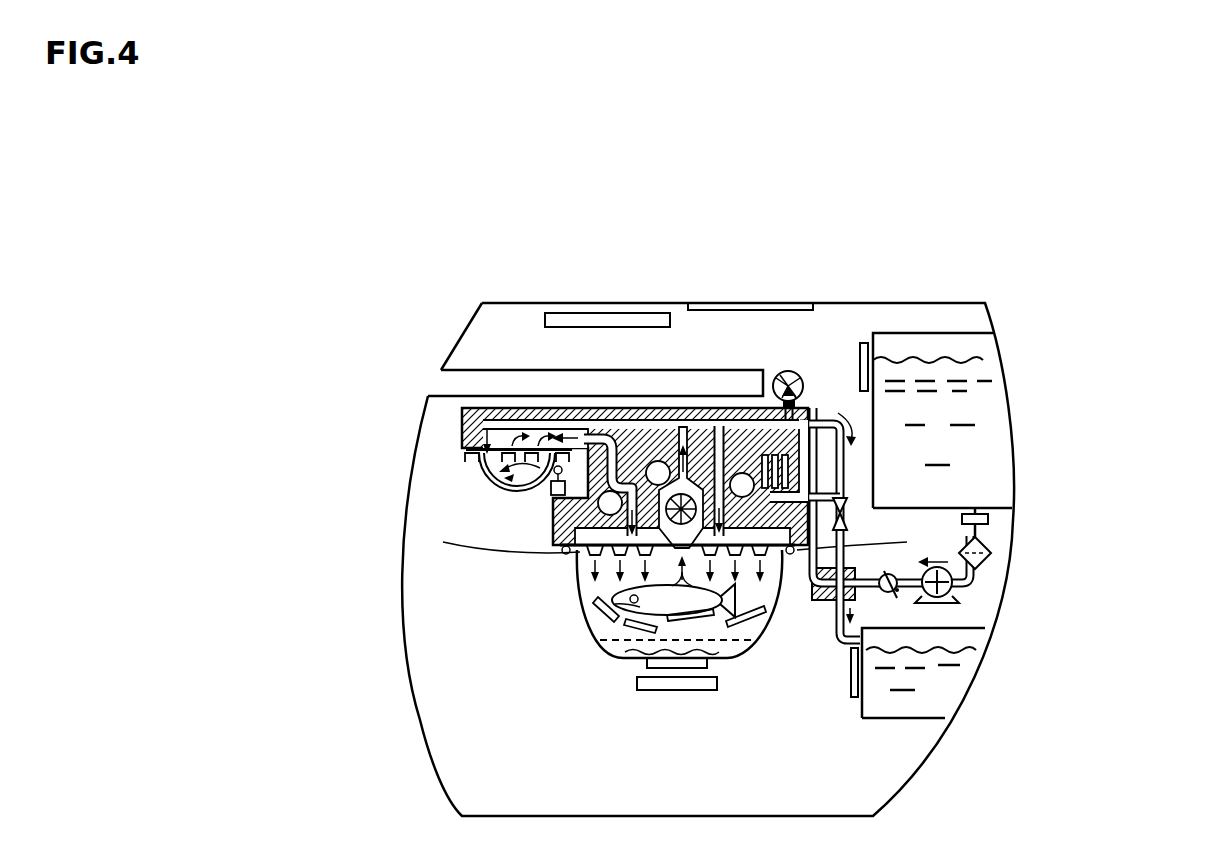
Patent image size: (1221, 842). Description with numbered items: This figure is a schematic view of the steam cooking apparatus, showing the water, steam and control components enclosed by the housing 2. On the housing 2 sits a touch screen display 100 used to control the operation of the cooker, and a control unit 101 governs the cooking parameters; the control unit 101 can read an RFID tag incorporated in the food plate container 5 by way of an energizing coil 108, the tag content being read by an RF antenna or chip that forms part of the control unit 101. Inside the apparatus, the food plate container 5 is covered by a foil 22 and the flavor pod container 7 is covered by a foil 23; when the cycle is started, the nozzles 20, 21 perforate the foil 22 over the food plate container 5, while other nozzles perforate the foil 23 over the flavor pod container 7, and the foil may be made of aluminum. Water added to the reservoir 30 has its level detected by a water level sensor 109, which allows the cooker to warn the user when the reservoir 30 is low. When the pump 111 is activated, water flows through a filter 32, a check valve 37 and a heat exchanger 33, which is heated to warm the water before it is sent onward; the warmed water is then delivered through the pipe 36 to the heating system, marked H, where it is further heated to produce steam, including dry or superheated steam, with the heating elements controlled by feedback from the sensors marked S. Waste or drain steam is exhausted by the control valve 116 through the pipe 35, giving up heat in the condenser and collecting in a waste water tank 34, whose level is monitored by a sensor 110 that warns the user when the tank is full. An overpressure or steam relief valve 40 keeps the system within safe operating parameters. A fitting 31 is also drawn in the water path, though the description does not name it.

The housing 2 is at (477, 302).
The control unit 101 is at (613, 318).
The touch screen display 100 is at (763, 303).
The water level sensor 109 is at (863, 343).
The overpressure or steam relief valve 40 is at (789, 372).
The pipe 35 is at (818, 420).
The reservoir 30 is at (1000, 408).
The control valve 116 is at (848, 503).
The connector 31 is at (990, 519).
The filter 32 is at (990, 553).
The pump 111 is at (955, 592).
The check valve 37 is at (896, 592).
The waste water tank 34 is at (950, 685).
The sensor 110 is at (855, 698).
The heat exchanger 33 is at (822, 600).
The pipe 36 is at (798, 555).
The flavor pod container 7 is at (497, 490).
The foil 23 is at (497, 472).
The nozzle 21 is at (483, 460).
The nozzle 20 is at (590, 553).
The food plate container 5 is at (600, 633).
The foil 22 is at (598, 590).
The energizing coil 108 is at (676, 690).